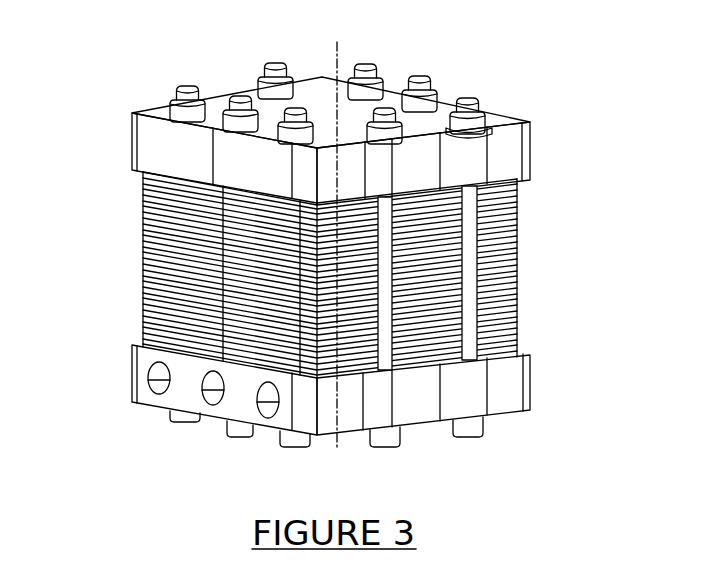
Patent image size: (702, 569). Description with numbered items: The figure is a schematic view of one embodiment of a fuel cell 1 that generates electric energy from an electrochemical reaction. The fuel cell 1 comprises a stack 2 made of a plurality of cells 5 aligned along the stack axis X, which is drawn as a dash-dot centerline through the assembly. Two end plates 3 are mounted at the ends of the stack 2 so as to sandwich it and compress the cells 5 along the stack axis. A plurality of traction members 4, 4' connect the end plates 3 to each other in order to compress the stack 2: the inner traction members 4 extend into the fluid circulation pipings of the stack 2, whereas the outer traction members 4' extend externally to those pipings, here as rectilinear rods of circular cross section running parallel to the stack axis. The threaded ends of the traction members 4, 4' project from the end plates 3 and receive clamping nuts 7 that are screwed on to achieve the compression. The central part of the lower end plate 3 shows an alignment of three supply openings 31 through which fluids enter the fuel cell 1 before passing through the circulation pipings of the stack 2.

The fuel cell 1 is at (114, 67).
The stack 2 is at (520, 180).
The end plate 3 is at (132, 145).
The inner traction member 4 is at (349, 72).
The outer traction member 4' is at (479, 331).
The cell 5 is at (145, 233).
The clamping nut 7 is at (493, 110).
The supply opening 31 is at (158, 395).